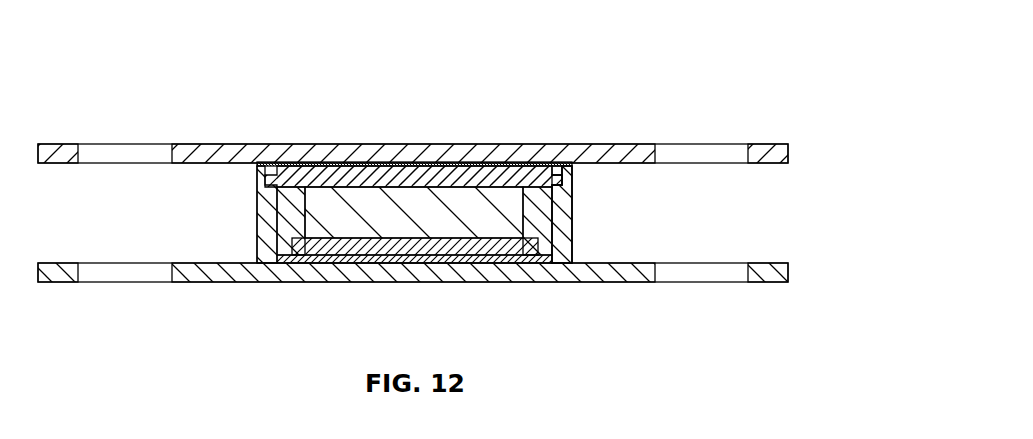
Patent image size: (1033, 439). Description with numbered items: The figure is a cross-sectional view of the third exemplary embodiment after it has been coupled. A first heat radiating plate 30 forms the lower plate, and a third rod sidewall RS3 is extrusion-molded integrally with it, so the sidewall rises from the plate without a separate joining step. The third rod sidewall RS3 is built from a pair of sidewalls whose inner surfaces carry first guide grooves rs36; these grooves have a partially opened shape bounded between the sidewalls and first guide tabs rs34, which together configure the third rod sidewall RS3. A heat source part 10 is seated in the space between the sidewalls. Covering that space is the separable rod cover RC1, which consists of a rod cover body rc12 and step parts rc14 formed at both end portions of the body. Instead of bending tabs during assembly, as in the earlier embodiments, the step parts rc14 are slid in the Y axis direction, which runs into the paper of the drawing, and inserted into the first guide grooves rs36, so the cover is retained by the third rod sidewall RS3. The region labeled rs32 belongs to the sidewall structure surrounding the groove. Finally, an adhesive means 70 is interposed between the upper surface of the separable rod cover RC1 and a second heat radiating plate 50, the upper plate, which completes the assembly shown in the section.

The heat source part 10 is at (352, 226).
The first heat radiating plate 30 is at (771, 308).
The second heat radiating plate 50 is at (771, 118).
The adhesive means 70 is at (304, 162).
The separable rod cover RC1 is at (520, 60).
The rod cover body rc12 is at (395, 163).
The step parts rc14 is at (556, 163).
The side wall rs32 is at (565, 195).
The first guide tabs rs34 is at (563, 170).
The first guide grooves rs36 is at (562, 181).
The third rod sidewall RS3 is at (240, 250).